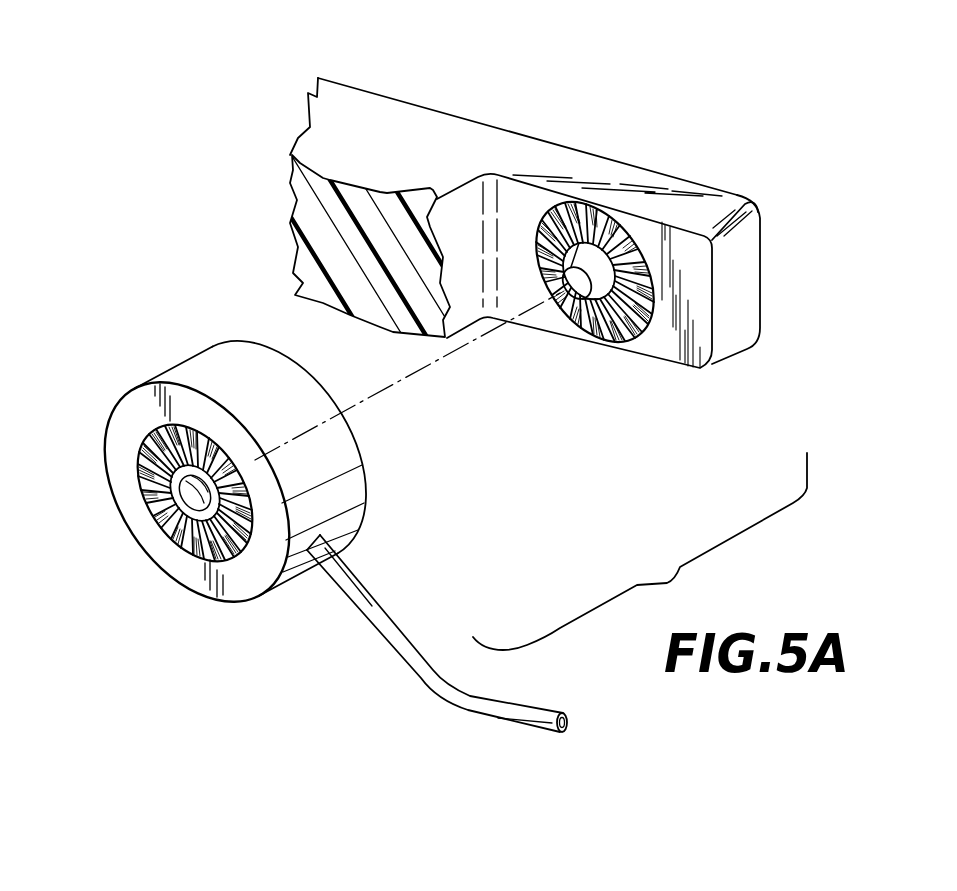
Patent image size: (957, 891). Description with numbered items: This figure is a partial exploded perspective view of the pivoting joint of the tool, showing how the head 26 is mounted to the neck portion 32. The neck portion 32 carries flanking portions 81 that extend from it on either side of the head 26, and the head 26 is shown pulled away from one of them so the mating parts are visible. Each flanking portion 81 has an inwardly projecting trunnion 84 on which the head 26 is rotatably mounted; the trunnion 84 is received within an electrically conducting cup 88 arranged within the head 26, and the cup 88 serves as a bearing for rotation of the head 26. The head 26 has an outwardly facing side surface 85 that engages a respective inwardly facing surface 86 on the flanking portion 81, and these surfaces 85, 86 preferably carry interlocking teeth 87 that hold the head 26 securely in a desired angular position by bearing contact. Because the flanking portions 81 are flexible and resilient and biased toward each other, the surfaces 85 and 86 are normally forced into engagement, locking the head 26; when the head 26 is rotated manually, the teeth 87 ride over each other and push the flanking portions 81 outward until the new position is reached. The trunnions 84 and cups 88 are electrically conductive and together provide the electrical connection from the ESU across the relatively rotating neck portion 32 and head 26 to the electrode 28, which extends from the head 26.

The neck portion 32 is at (440, 132).
The flanking portions 81 is at (745, 288).
The inwardly facing surfaces 86 is at (540, 210).
The interlocking teeth 87 is at (630, 318).
The trunnions 84 is at (583, 292).
The head 26 is at (205, 365).
The outwardly facing side surfaces 85 is at (140, 478).
The electrically conducting cups 88 is at (157, 517).
The electrode 28 is at (423, 673).